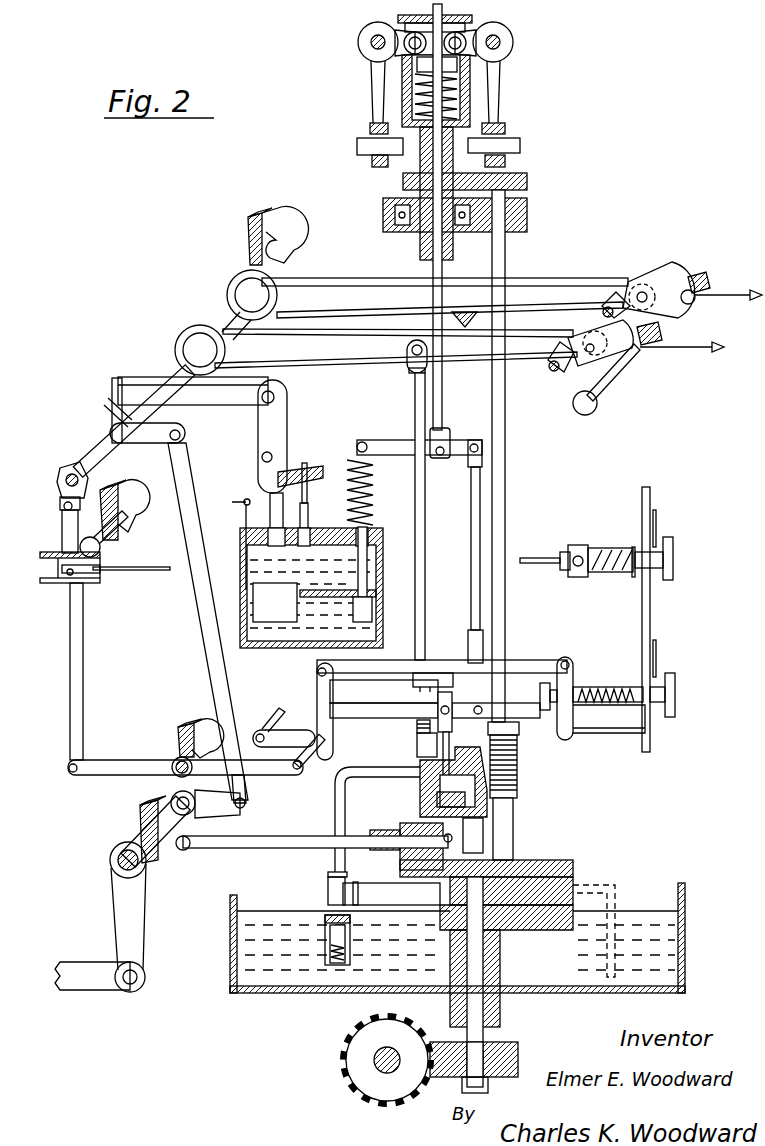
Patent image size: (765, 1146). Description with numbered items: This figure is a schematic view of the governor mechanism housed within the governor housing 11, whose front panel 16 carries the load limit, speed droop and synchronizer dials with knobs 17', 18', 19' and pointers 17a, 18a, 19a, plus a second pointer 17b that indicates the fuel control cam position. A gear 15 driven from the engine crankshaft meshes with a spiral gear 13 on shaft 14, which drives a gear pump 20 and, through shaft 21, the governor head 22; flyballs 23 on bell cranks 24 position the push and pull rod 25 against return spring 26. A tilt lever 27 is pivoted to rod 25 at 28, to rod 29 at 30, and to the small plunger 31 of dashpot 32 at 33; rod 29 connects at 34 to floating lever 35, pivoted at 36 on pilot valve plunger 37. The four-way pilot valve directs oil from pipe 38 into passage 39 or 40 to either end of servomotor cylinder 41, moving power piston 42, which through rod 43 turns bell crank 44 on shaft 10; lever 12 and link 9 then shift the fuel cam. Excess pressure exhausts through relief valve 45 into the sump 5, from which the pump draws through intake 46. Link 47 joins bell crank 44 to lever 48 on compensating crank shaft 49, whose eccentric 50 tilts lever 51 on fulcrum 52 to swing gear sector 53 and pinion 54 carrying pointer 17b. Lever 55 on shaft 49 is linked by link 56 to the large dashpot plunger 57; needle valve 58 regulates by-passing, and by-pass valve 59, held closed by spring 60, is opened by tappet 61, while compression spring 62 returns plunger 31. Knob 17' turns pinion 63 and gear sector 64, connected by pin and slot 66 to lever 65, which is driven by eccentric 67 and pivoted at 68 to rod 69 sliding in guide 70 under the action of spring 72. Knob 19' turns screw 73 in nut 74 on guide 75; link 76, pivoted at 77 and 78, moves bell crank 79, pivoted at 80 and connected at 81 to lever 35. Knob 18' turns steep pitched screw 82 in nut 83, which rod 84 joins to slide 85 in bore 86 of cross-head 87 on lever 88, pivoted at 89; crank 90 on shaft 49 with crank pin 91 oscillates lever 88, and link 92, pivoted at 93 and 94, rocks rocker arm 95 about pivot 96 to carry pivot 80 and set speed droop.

The water tank 5 is at (236, 994).
The link 9 is at (85, 980).
The shaft 10 is at (135, 832).
The housing 11 is at (248, 230).
The lever 12 is at (145, 910).
The spiral gear 13 is at (518, 1055).
The shaft 14 is at (483, 1030).
The gear 15 is at (345, 1063).
The front panel 16 is at (650, 600).
The pointer 17a is at (688, 353).
The second pointer 17b is at (742, 290).
The knob 17' is at (606, 390).
The knob 18' is at (689, 558).
The pointer 18a is at (658, 512).
The knob 19' is at (684, 695).
The pointer 19a is at (658, 655).
The gear pump 20 is at (565, 860).
The shaft 21 is at (507, 632).
The governor head 22 is at (470, 112).
The flyballs 23 is at (520, 144).
The bell cranks 24 is at (495, 71).
The push and pull rod 25 is at (443, 274).
The return spring 26 is at (395, 92).
The tilt lever 27 is at (452, 445).
The pivotal connection 28 is at (440, 456).
The rod 29 is at (471, 555).
The pivotal connection 30 is at (484, 448).
The small plunger 31 is at (368, 546).
The dashpot 32 is at (372, 600).
The pivotal connection 33 is at (364, 440).
The pivotal connection 34 is at (545, 708).
The tilt lever 35 is at (360, 717).
The pivot 36 is at (438, 710).
The pilot valve plunger 37 is at (450, 740).
The pipe 38 is at (372, 770).
The passage 39 is at (440, 800).
The passage 40 is at (518, 774).
The cylinder 41 is at (483, 833).
The piston 42 is at (483, 850).
The rod 43 is at (258, 848).
The bell crank 44 is at (212, 815).
The relief valve 45 is at (320, 935).
The intake 46 is at (612, 886).
The link 47 is at (222, 672).
The lever 48 is at (148, 444).
The compensating crank shaft 49 is at (98, 448).
The eccentric 50 is at (240, 280).
The lever 51 is at (350, 278).
The fulcrum 52 is at (469, 324).
The gear sector 53 is at (655, 262).
The pinion 54 is at (702, 270).
The lever 55 is at (218, 400).
The link 56 is at (280, 417).
The large plunger 57 is at (275, 602).
The needle valve 58 is at (240, 565).
The by-pass valve 59 is at (309, 520).
The spring 60 is at (312, 570).
The tappet 61 is at (312, 470).
The coiled compression spring 62 is at (373, 503).
The pinion 63 is at (662, 333).
The gear sector 64 is at (590, 330).
The lever 65 is at (356, 357).
The pin and slot connection 66 is at (602, 340).
The eccentric 67 is at (195, 333).
The pivotal connection 68 is at (410, 336).
The rod 69 is at (425, 530).
The guide 70 is at (417, 738).
The compression spring 72 is at (416, 686).
The screw 73 is at (608, 687).
The nut 74 is at (574, 718).
The guide 75 is at (613, 736).
The link 76 is at (548, 660).
The pivotal connection 77 is at (574, 663).
The pivotal connection 78 is at (316, 672).
The bell crank 79 is at (334, 692).
The pivot 80 is at (312, 753).
The pivotal connection 81 is at (270, 718).
The steep pitched screw 82 is at (605, 548).
The nut 83 is at (579, 578).
The rod 84 is at (145, 571).
The slide 85 is at (58, 583).
The bore 86 is at (100, 568).
The cross-head 87 is at (40, 554).
The lever 88 is at (62, 526).
The pivot 89 is at (100, 545).
The crank 90 is at (58, 480).
The crank pin 91 is at (60, 505).
The link 92 is at (83, 662).
The pivot 93 is at (75, 575).
The pivot 94 is at (68, 774).
The rocker arm 95 is at (97, 777).
The pivot 96 is at (178, 748).